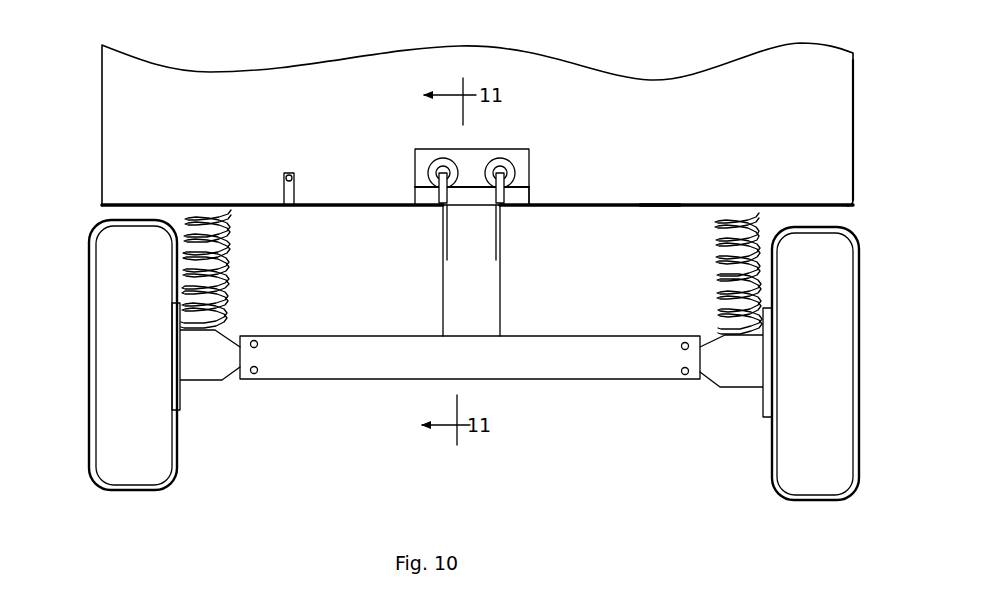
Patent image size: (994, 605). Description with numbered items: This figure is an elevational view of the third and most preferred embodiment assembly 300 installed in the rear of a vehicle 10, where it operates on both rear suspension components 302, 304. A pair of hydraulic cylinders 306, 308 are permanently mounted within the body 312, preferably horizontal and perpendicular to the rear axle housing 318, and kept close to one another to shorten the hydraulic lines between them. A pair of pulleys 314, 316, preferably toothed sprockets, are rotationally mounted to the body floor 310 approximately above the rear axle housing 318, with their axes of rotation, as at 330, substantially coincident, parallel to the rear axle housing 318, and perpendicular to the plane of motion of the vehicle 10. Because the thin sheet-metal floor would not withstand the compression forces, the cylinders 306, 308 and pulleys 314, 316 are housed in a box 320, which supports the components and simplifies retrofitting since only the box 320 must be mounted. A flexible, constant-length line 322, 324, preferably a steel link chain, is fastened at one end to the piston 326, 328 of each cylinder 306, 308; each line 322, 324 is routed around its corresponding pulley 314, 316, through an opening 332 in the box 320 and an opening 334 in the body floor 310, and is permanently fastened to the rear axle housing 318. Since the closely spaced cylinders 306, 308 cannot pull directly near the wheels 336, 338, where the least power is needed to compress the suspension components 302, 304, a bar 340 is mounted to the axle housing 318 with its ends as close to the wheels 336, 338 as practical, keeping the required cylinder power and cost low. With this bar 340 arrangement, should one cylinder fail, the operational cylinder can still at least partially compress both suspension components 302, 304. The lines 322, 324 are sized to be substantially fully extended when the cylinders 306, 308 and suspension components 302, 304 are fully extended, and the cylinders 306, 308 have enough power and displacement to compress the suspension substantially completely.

The vehicle 10 is at (447, 103).
The body 312 is at (101, 113).
The assembly 300 is at (470, 272).
The rear suspension component 302 is at (147, 328).
The rear suspension component 304 is at (796, 338).
The hydraulic cylinder 306 is at (434, 152).
The hydraulic cylinder 308 is at (506, 152).
The body floor 310 is at (657, 208).
The pulley 314 is at (438, 200).
The pulley 316 is at (506, 200).
The rear axle housing 318 is at (714, 388).
The box 320 is at (415, 168).
The line 322 is at (442, 305).
The line 324 is at (500, 310).
The piston 326 is at (436, 176).
The piston 328 is at (512, 180).
The axis of rotation 330 is at (527, 197).
The opening 332 is at (462, 198).
The opening 334 is at (478, 208).
The wheel 336 is at (178, 450).
The wheel 338 is at (768, 468).
The bar 340 is at (614, 382).